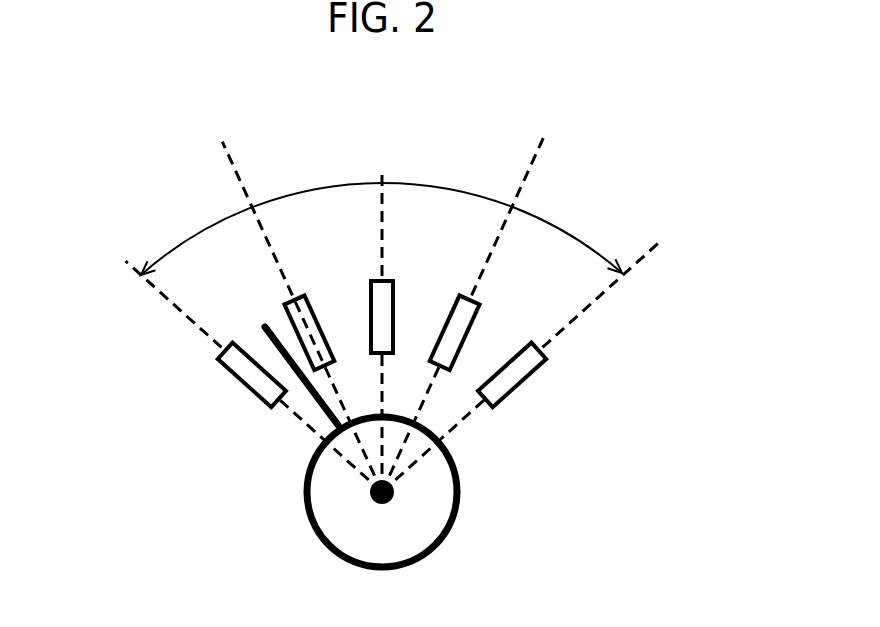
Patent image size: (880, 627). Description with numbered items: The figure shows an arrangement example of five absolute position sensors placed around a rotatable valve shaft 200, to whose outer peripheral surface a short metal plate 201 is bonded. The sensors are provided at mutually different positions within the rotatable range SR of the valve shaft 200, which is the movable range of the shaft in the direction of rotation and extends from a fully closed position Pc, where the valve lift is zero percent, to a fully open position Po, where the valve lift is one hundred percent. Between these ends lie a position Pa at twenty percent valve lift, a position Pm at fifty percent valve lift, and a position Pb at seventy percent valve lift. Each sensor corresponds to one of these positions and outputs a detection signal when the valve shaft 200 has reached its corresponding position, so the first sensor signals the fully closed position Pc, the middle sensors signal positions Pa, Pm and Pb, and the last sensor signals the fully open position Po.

The valve shaft 200 is at (310, 523).
The short plate 201 is at (312, 400).
The rotatable range SR is at (192, 235).
The fully closed position Pc is at (224, 358).
The position Pa is at (278, 302).
The position Pm is at (397, 317).
The position Pb is at (495, 300).
The fully open position Po is at (568, 354).